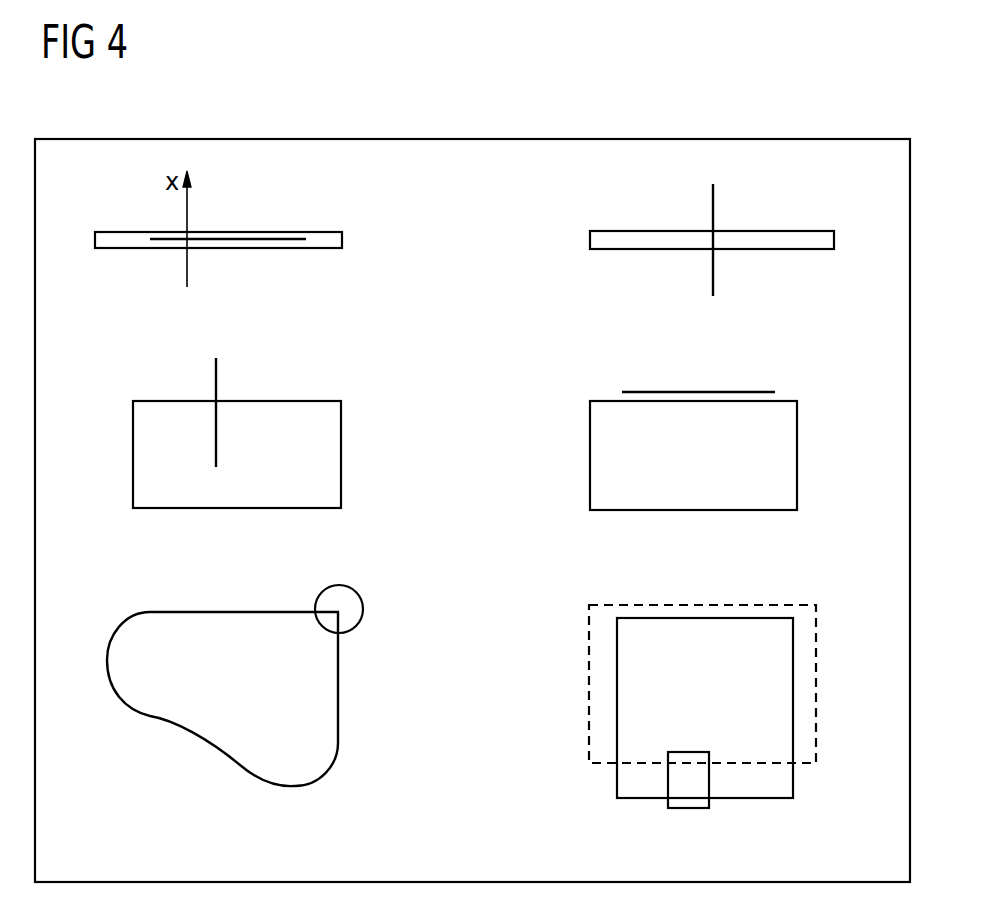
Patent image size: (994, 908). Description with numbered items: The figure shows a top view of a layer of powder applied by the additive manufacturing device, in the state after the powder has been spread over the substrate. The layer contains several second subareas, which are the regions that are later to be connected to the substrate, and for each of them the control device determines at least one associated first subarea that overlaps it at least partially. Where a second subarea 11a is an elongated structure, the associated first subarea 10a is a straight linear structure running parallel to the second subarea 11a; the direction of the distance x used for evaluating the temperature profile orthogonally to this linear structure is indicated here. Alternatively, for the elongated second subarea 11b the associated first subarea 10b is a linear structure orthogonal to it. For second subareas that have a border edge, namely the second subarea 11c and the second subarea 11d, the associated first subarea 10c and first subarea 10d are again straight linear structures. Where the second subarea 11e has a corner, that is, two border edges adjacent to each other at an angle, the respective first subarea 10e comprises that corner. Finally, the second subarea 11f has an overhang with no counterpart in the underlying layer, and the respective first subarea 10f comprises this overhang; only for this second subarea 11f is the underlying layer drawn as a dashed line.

The first subarea 10a is at (265, 239).
The second subarea 11a is at (342, 240).
The first subarea 10b is at (713, 195).
The second subarea 11b is at (590, 242).
The first subarea 10c is at (216, 368).
The second subarea 11c is at (341, 433).
The first subarea 10d is at (648, 392).
The second subarea 11d is at (590, 460).
The first subarea 10e is at (363, 612).
The second subarea 11e is at (338, 676).
The first subarea 10f is at (668, 778).
The second subarea 11f is at (617, 722).